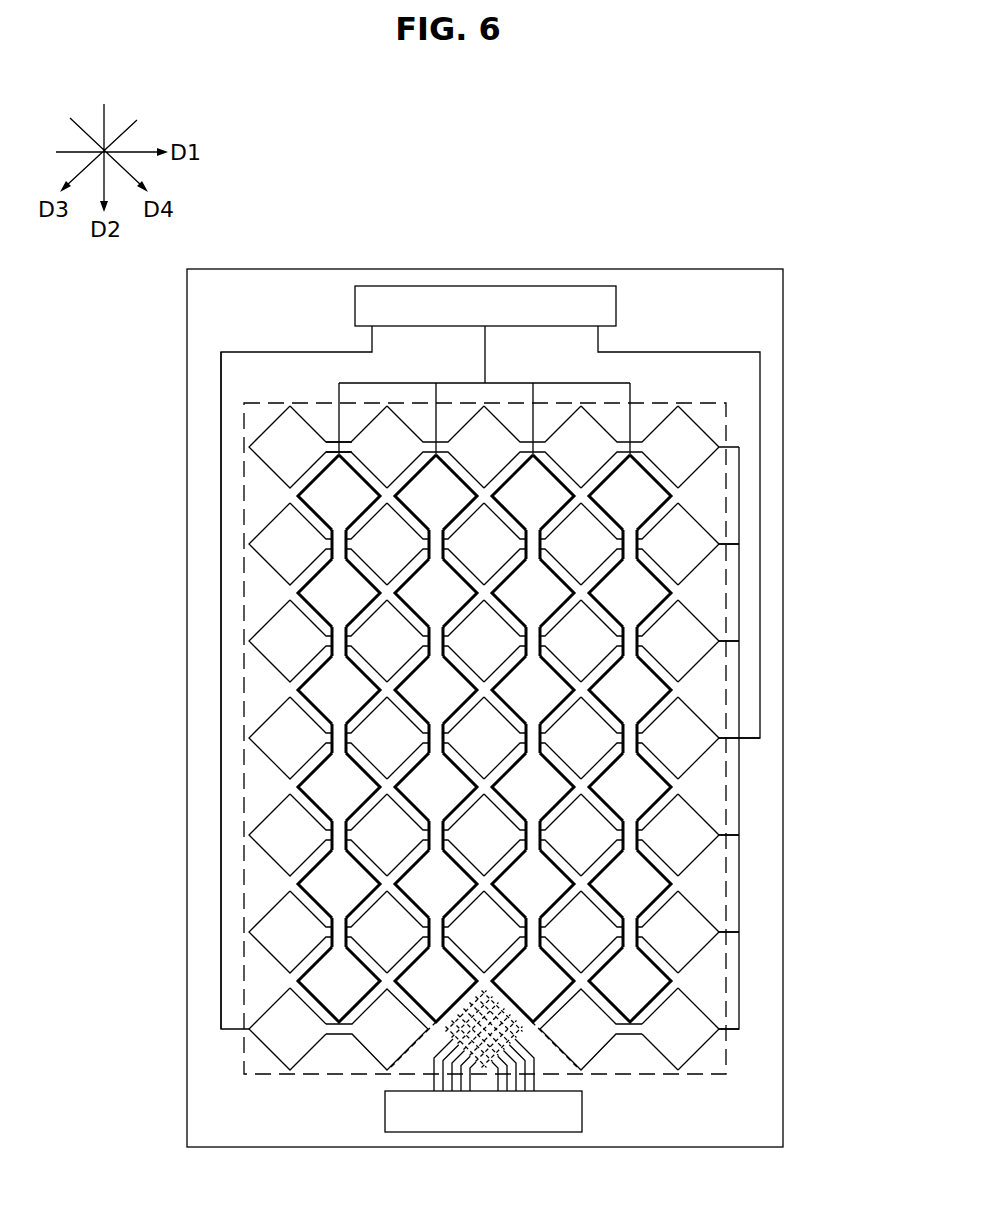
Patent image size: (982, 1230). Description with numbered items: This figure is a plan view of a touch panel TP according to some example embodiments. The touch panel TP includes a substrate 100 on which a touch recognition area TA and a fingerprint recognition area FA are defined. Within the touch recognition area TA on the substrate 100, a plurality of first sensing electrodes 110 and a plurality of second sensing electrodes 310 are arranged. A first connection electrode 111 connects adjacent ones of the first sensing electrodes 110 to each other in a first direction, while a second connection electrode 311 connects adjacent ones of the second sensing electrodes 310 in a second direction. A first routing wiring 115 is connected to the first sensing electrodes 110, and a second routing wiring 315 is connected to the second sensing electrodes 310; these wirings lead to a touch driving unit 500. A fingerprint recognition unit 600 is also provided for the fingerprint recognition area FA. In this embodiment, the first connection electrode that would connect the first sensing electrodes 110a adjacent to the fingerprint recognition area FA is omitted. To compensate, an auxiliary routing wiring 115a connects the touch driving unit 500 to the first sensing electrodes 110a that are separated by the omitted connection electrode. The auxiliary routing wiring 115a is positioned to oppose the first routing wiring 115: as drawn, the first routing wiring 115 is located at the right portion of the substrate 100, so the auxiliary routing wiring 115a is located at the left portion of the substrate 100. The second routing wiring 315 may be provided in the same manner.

The substrate 100 is at (774, 310).
The first sensing electrodes 110 is at (267, 438).
The first sensing electrodes adjacent to the fingerprint recognition area 110a is at (375, 1043).
The first connection electrode 111 is at (332, 445).
The first routing wiring 115 is at (762, 390).
The auxiliary routing wiring 115a is at (220, 651).
The second sensing electrodes 310 is at (323, 510).
The second connection electrode 311 is at (330, 542).
The second routing wiring 315 is at (485, 353).
The touch driving unit 500 is at (541, 294).
The fingerprint recognition unit 600 is at (484, 1113).
The fingerprint recognition area FA is at (552, 1060).
The touch recognition area TA is at (673, 1075).
The touch panel TP is at (700, 251).